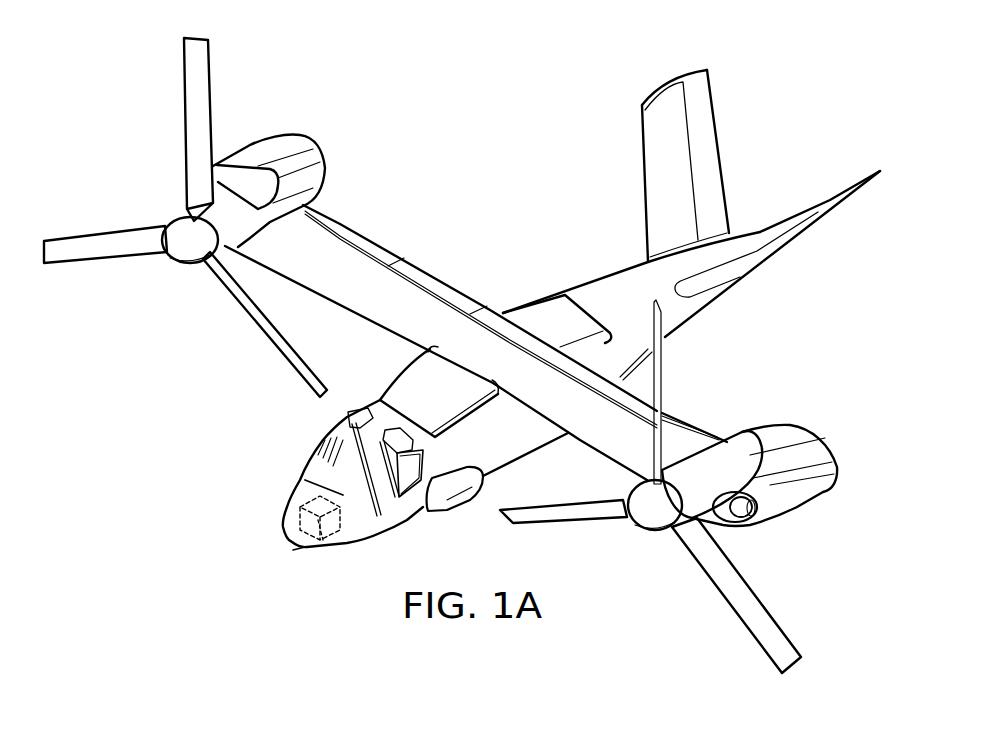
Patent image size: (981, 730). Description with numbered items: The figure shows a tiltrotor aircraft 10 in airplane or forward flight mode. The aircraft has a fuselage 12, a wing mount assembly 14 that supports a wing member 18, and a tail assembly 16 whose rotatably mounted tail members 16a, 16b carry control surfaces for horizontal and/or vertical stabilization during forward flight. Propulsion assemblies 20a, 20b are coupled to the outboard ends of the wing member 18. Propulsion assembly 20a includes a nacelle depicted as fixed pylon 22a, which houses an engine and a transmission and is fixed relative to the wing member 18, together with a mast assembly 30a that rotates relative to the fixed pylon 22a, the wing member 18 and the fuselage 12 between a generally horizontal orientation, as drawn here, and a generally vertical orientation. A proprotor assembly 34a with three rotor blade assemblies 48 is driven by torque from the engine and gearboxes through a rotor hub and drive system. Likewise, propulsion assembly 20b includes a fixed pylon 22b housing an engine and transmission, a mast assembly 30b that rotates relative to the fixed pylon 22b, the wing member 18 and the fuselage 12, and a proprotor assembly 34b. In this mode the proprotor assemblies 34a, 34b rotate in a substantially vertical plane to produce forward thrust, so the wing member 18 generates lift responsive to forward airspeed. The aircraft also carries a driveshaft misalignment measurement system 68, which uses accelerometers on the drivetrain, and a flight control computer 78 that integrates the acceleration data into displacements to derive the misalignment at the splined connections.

The tiltrotor aircraft 10 is at (531, 179).
The fuselage 12 is at (610, 290).
The wing mount assembly 14 is at (540, 313).
The tail assembly 16 is at (693, 71).
The tail member 16b is at (685, 166).
The tail member 16a is at (848, 198).
The wing member 18 is at (413, 305).
The propulsion assembly 20a is at (784, 420).
The propulsion assembly 20b is at (293, 131).
The fixed pylon 22a is at (812, 498).
The fixed pylon 22b is at (307, 150).
The mast assembly 30a is at (713, 452).
The mast assembly 30b is at (261, 178).
The proprotor assembly 34a is at (637, 533).
The proprotor assembly 34b is at (163, 258).
The rotor blade assembly 48 is at (726, 608).
The driveshaft misalignment measurement system 68 is at (296, 517).
The flight control computer 78 is at (334, 536).